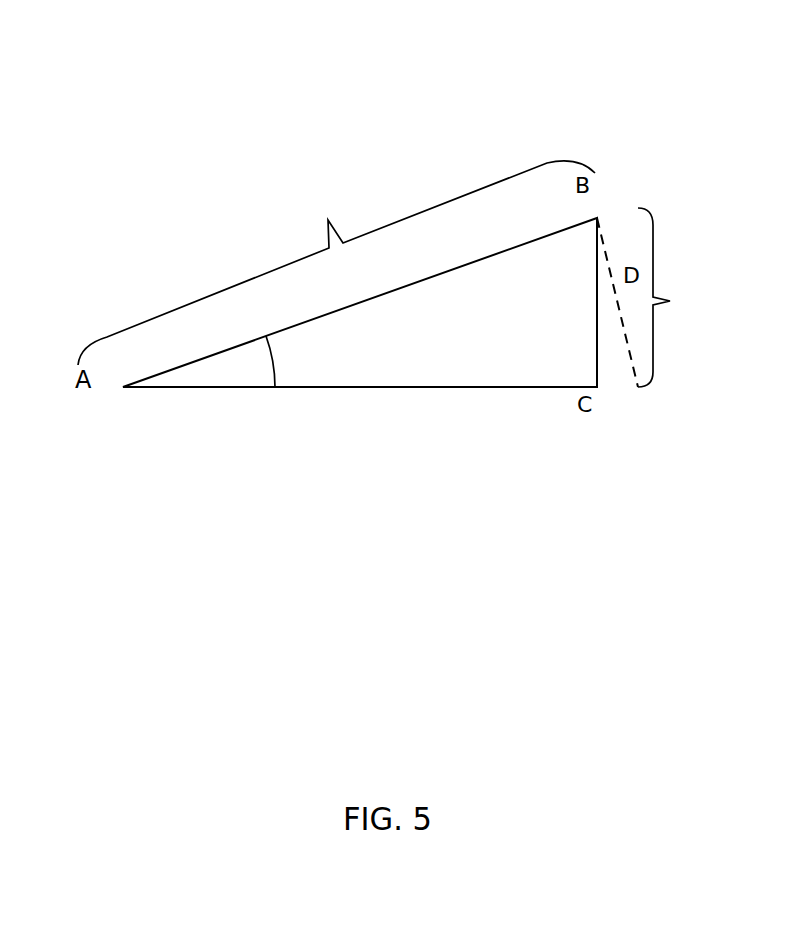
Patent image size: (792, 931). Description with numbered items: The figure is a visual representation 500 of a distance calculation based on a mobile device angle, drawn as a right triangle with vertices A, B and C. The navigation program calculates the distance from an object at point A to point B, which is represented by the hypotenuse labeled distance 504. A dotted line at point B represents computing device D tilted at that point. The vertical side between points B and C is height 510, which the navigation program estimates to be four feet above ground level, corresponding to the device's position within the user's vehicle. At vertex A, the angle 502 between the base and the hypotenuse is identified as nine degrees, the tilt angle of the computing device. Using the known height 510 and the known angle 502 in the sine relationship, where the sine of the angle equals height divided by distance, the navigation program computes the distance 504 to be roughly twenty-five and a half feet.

The triangle geometry diagram 500 is at (445, 212).
The angle 502 is at (275, 360).
The distance 504 is at (336, 263).
The height 510 is at (663, 297).